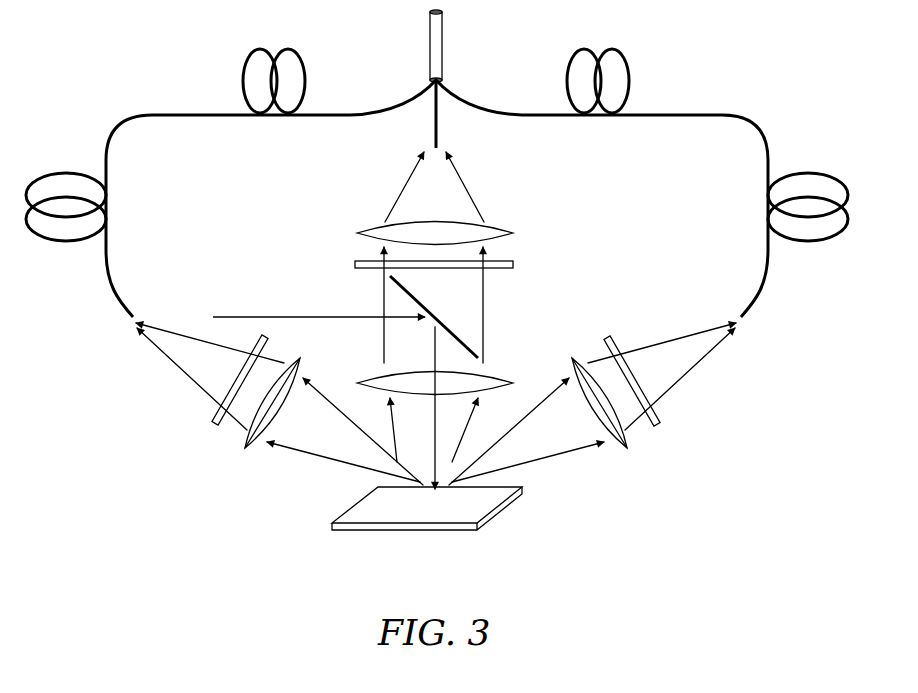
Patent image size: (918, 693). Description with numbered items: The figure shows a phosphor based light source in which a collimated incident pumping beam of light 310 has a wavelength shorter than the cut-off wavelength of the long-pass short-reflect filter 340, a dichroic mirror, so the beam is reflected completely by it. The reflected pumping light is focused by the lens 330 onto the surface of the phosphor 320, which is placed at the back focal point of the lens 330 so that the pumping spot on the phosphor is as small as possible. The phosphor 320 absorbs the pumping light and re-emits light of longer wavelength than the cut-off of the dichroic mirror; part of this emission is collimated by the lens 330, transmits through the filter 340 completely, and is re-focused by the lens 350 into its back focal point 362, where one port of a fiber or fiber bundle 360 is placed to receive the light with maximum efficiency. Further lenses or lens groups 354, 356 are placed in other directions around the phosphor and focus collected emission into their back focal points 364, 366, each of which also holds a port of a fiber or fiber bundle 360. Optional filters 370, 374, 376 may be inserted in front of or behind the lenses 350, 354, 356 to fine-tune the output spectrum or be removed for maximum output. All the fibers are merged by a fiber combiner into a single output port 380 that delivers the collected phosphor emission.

The collimated incident pumping beam of light 310 is at (248, 316).
The phosphor 320 is at (420, 532).
The lens 330 is at (490, 375).
The long-pass short-reflect filter 340 is at (448, 330).
The lens 350 is at (367, 227).
The lens 354 is at (625, 450).
The lens 356 is at (247, 450).
The fiber or fiber bundle 360 is at (152, 114).
The back focal point of lens 350 362 is at (423, 148).
The back focal point 364 is at (745, 326).
The back focal point 366 is at (129, 326).
The filter 370 is at (514, 264).
The filter 374 is at (657, 412).
The filter 376 is at (216, 410).
The fiber output connector 380 is at (443, 38).